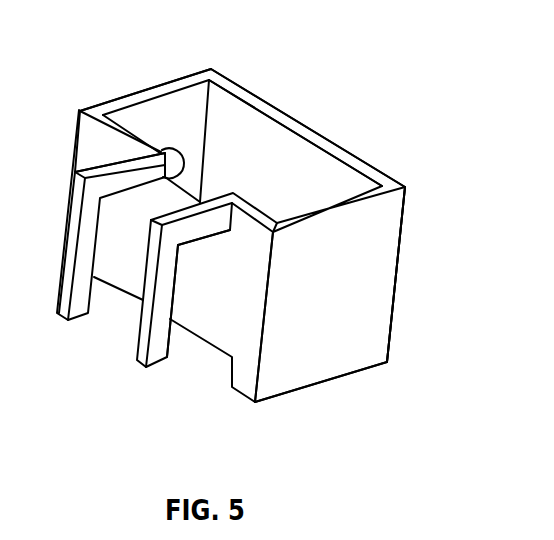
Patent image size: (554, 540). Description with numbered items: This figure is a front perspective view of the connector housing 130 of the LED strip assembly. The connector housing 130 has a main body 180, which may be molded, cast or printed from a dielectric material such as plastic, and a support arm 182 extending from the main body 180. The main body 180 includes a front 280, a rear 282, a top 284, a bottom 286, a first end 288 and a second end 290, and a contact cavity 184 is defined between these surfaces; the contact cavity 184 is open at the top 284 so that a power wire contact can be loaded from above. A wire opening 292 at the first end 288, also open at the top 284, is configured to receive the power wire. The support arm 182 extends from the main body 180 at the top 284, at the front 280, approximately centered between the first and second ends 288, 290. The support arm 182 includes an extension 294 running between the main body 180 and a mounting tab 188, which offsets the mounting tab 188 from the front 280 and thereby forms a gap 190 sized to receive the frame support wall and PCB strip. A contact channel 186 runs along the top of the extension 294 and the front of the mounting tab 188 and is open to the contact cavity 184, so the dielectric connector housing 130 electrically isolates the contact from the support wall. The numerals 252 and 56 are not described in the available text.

The connector housing 130 is at (305, 108).
The main body 180 is at (382, 292).
The support arm 182 is at (160, 333).
The contact cavity 184 is at (310, 184).
The contact channel 186 is at (117, 270).
The mounting tab 188 is at (181, 280).
The gap 190 is at (213, 270).
The mounting member 252 is at (0, 200).
The frame 56 is at (14, 234).
The front 280 is at (247, 340).
The rear 282 is at (398, 250).
The top 284 is at (250, 98).
The bottom 286 is at (247, 402).
The first end 288 is at (343, 352).
The second end 290 is at (147, 88).
The wire opening 292 is at (184, 152).
The extension 294 is at (95, 167).